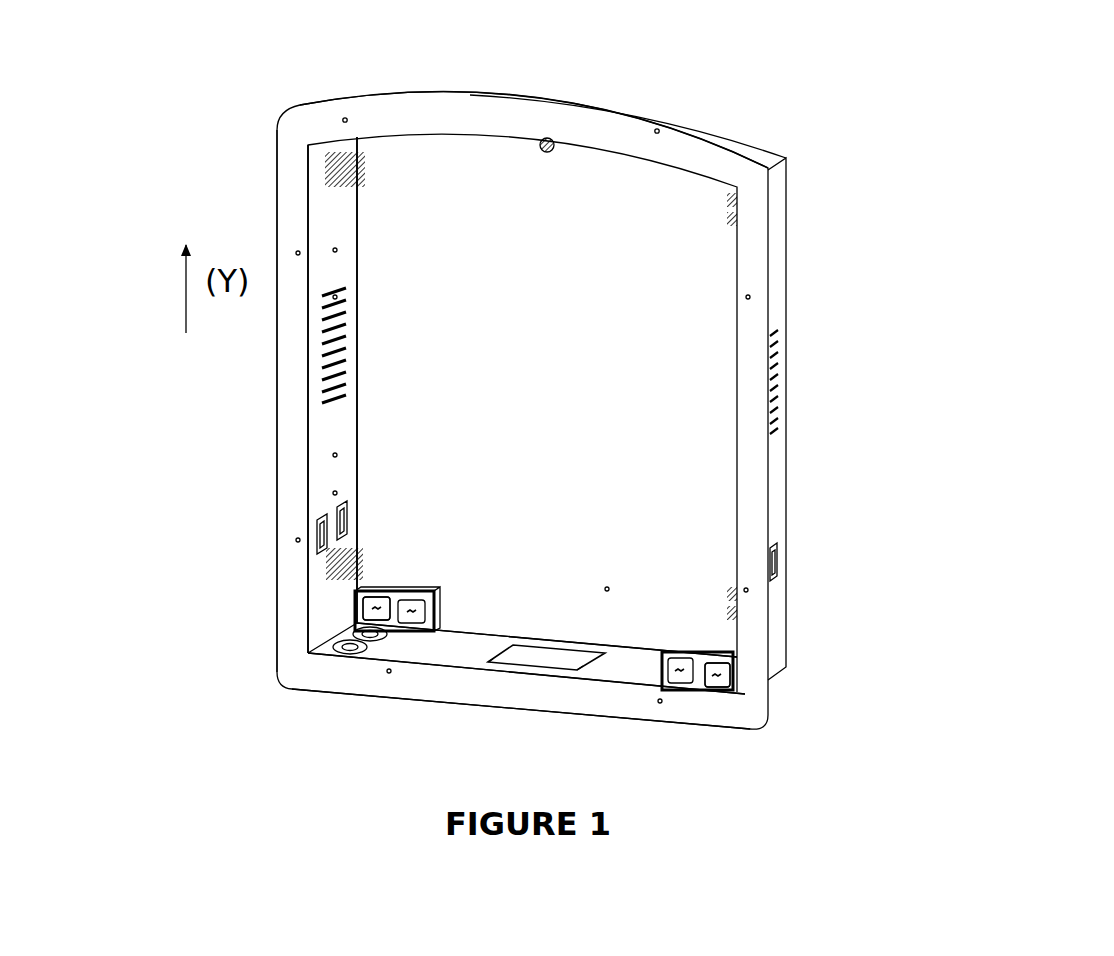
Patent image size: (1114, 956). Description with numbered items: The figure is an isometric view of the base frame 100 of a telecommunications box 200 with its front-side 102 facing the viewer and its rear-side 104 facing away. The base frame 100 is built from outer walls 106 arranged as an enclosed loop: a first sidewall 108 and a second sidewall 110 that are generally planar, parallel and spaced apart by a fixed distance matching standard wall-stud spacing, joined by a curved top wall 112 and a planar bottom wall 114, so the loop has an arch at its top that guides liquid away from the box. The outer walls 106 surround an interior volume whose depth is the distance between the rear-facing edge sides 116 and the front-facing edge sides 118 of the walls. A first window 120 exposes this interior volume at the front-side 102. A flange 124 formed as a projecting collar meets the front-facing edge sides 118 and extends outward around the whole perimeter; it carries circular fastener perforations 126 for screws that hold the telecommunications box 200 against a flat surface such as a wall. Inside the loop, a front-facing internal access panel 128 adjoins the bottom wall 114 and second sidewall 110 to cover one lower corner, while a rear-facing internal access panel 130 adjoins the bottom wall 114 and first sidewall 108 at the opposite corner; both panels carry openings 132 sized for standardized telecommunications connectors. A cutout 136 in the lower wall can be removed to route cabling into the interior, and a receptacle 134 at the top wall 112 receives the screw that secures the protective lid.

The base frame 100 is at (874, 432).
The front-side 102 is at (287, 420).
The rear-side 104 is at (357, 396).
The outer walls 106 is at (335, 265).
The first sidewall 108 is at (345, 315).
The second sidewall 110 is at (772, 325).
The top wall 112 is at (647, 115).
The bottom wall 114 is at (612, 658).
The rear-facing edge sides 116 is at (357, 467).
The front-facing edge sides 118 is at (308, 490).
The first window 120 is at (385, 211).
The flange 124 is at (290, 615).
The fastener perforations 126 is at (388, 672).
The front-facing internal access panel 128 is at (737, 663).
The rear-facing internal access panel 130 is at (391, 591).
The openings 132 is at (370, 590).
The receptacle 134 is at (550, 141).
The cutout 136 is at (545, 645).
The telecommunications box 200 is at (542, 72).